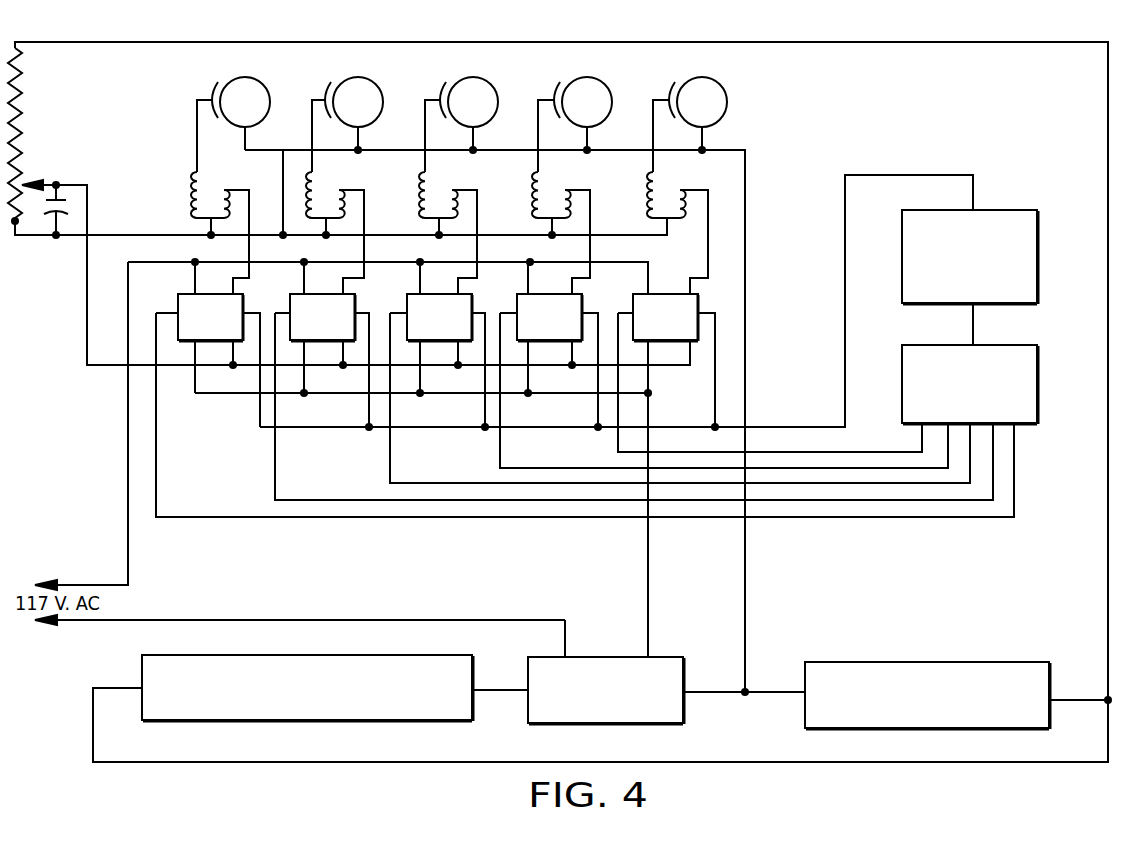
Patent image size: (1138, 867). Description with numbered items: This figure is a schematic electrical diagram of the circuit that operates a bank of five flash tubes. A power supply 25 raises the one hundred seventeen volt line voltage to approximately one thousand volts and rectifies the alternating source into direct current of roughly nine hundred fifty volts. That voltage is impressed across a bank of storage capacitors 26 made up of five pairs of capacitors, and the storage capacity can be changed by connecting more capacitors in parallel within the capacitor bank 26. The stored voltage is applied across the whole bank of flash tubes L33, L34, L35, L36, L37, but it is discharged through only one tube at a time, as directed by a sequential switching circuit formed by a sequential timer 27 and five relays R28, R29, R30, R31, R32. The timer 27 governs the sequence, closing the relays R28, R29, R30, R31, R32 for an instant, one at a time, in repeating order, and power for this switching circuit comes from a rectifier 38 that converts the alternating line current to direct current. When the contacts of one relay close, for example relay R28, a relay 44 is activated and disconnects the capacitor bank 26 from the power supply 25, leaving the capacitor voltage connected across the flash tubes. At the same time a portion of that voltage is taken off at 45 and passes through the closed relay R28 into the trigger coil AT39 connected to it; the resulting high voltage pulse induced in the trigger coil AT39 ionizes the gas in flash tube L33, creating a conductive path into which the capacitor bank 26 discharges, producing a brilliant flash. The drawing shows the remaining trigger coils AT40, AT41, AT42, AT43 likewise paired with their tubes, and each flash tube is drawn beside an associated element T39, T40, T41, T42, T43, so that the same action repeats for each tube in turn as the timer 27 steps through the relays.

The power supply 25 is at (307, 688).
The bank of storage capacitors 26 is at (927, 695).
The sequential timer 27 is at (970, 384).
The rectifier 38 is at (970, 257).
The relay 44 is at (606, 690).
The voltage take-off point 45 is at (27, 180).
The relay R28 is at (210, 317).
The relay R29 is at (322, 317).
The relay R30 is at (439, 317).
The relay R31 is at (549, 317).
The relay R32 is at (665, 317).
The flash tube L33 is at (245, 102).
The flash tube L34 is at (358, 102).
The flash tube L35 is at (473, 102).
The flash tube L36 is at (587, 102).
The flash tube L37 is at (702, 102).
The photocell T39 is at (213, 95).
The photocell T40 is at (326, 95).
The photocell T41 is at (441, 88).
The photocell T42 is at (555, 95).
The photocell T43 is at (670, 95).
The trigger coil AT39 is at (205, 183).
The transformer AT40 is at (320, 183).
The transformer AT41 is at (433, 183).
The transformer AT42 is at (546, 183).
The transformer AT43 is at (661, 183).